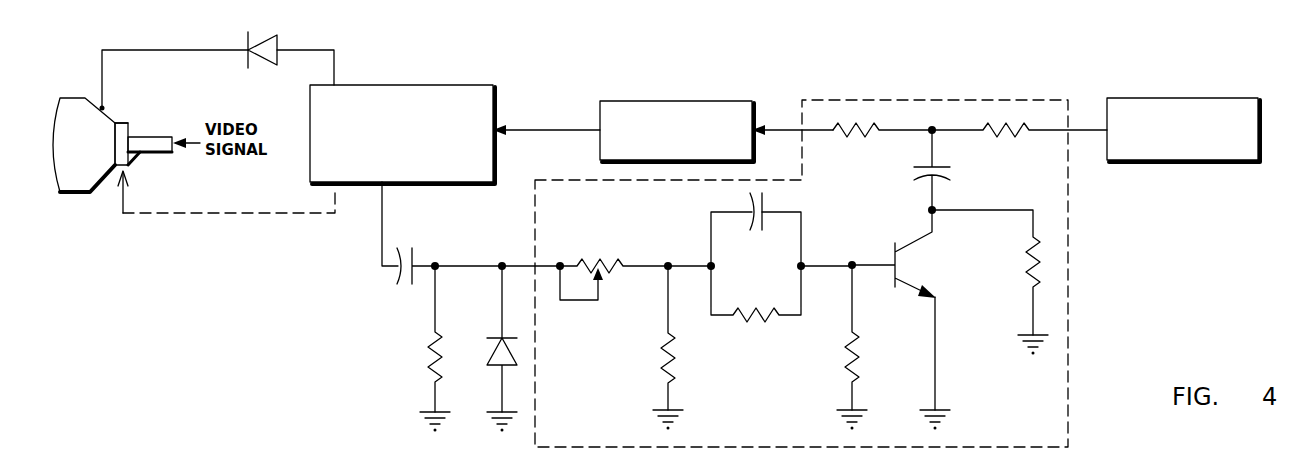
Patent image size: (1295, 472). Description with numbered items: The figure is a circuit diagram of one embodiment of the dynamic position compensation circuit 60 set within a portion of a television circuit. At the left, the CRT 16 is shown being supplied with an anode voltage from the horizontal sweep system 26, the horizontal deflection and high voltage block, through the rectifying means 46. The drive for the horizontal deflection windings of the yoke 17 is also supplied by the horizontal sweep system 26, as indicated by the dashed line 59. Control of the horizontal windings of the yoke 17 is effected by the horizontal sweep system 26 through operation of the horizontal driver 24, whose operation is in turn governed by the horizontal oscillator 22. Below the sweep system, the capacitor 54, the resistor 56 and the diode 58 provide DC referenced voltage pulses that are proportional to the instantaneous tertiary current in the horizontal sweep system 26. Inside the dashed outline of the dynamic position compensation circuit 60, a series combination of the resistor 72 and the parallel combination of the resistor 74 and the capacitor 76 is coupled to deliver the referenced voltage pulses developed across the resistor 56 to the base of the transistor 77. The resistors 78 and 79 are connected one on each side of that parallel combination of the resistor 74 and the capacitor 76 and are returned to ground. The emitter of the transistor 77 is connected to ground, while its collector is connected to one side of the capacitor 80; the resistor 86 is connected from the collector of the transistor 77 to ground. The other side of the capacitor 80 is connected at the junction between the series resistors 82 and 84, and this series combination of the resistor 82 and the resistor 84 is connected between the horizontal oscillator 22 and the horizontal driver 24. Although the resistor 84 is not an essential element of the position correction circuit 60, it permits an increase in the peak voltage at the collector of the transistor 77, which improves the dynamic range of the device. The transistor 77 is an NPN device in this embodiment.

The CRT 16 is at (75, 91).
The yoke 17 is at (129, 119).
The horizontal oscillator 22 is at (1169, 89).
The horizontal driver 24 is at (680, 91).
The horizontal sweep system 26 is at (408, 76).
The rectifying means 46 is at (252, 32).
The capacitor 54 is at (413, 251).
The resistor 56 is at (426, 342).
The diode 58 is at (492, 352).
The dashed line 59 is at (252, 224).
The dynamic position compensation circuit 60 is at (1046, 437).
The resistor 72 is at (603, 252).
The resistor 74 is at (765, 324).
The capacitor 76 is at (766, 200).
The transistor 77 is at (910, 267).
The resistor 78 is at (676, 337).
The resistor 79 is at (866, 331).
The capacitor 80 is at (956, 174).
The resistor 82 is at (1003, 120).
The resistor 84 is at (858, 120).
The resistor 86 is at (1044, 260).